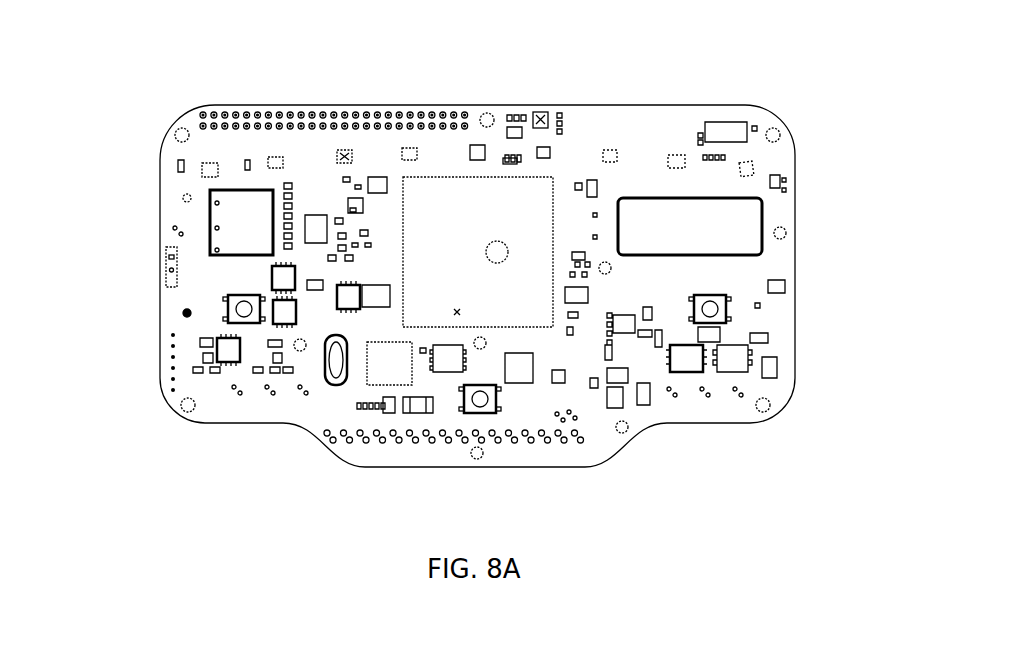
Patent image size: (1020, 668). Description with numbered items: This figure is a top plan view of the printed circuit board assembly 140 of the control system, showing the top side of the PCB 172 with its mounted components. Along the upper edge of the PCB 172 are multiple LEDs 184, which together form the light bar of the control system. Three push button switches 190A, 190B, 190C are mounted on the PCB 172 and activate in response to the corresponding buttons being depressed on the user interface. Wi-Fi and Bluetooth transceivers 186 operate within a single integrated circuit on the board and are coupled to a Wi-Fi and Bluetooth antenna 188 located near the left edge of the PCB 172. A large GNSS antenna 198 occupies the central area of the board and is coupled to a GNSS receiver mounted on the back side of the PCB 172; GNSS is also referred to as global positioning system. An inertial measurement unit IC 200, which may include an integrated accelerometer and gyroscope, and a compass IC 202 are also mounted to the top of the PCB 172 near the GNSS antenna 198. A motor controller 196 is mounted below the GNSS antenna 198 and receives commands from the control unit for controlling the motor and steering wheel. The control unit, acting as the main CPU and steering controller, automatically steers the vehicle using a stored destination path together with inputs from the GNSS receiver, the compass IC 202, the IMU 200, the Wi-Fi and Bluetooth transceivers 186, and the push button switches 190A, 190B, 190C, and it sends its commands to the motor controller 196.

The circuit board assembly 140 is at (779, 66).
The PCB 172 is at (795, 212).
The LEDs 184 is at (405, 150).
The Wi-Fi and Bluetooth transceivers 186 is at (216, 203).
The Wi-Fi and Bluetooth antenna 188 is at (172, 277).
The push button switch 190A is at (487, 410).
The push button switch 190B is at (243, 322).
The push button switch 190C is at (712, 315).
The motor controller 196 is at (390, 364).
The GNSS antenna 198 is at (535, 215).
The inertial measurement unit IC 200 is at (540, 117).
The compass IC 202 is at (505, 157).